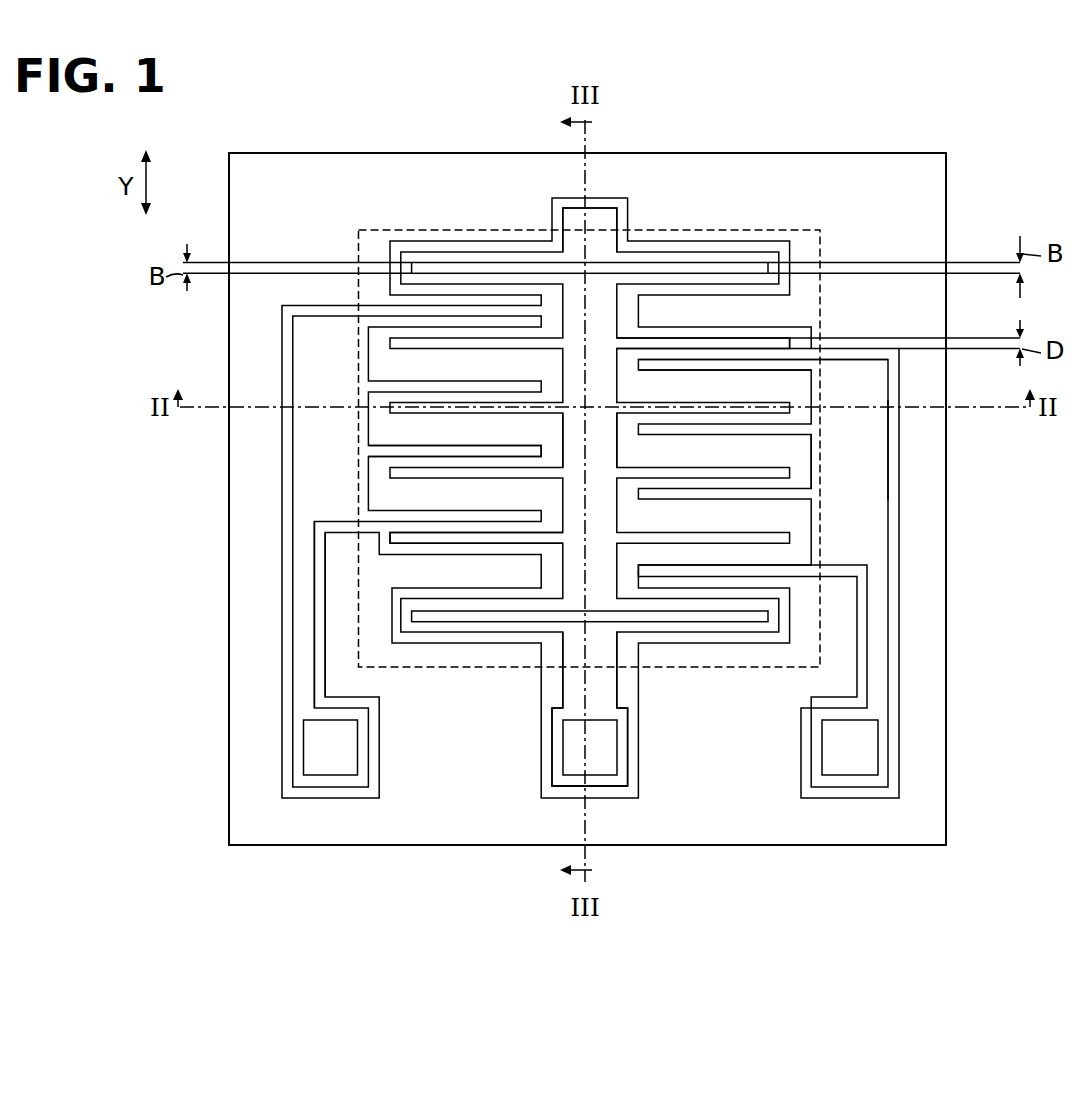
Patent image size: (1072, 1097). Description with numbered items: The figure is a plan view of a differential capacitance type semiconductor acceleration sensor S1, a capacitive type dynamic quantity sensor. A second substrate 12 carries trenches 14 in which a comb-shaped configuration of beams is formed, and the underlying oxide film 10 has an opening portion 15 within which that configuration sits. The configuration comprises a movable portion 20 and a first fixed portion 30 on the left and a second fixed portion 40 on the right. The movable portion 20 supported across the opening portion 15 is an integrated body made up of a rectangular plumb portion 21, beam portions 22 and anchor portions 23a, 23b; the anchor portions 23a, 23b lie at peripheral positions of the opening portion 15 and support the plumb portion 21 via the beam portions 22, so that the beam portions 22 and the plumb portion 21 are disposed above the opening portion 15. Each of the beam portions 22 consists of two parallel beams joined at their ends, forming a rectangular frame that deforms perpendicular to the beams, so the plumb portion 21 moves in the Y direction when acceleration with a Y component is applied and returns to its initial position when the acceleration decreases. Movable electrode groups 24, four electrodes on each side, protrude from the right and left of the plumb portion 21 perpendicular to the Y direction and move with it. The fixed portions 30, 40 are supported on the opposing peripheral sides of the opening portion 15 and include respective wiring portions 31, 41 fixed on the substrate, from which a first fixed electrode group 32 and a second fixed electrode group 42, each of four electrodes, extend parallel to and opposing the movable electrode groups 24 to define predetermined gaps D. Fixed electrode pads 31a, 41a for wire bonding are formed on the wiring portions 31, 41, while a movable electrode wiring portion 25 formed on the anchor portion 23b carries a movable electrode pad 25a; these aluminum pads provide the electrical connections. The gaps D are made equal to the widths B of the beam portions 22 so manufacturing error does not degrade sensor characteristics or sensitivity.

The oxide film 10 is at (813, 153).
The second substrate 12 is at (587, 471).
The trenches 14 is at (556, 199).
The opening portion 15 is at (399, 229).
The movable portion 20 is at (560, 425).
The rectangular plumb portion 21 is at (600, 442).
The beam portions 22 is at (697, 252).
The anchor portion 23a is at (598, 218).
The anchor portion 23b is at (575, 682).
The movable electrode groups 24 is at (742, 338).
The movable electrode wiring portion 25 is at (622, 742).
The movable electrode pad 25a is at (602, 757).
The first fixed portion 30 is at (330, 363).
The wiring portion 31 is at (330, 462).
The fixed electrode pad 31a is at (330, 752).
The first fixed electrode group 32 is at (455, 513).
The second fixed portion 40 is at (850, 490).
The wiring portion 41 is at (850, 466).
The fixed electrode pad 41a is at (853, 752).
The second fixed electrode group 42 is at (740, 369).
The acceleration sensor S1 is at (934, 153).